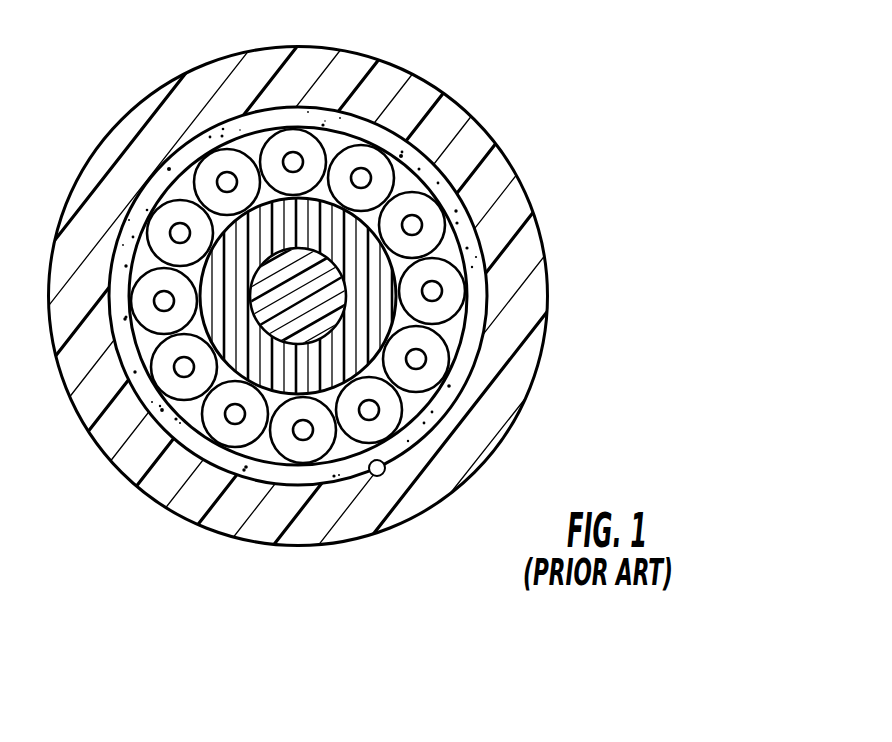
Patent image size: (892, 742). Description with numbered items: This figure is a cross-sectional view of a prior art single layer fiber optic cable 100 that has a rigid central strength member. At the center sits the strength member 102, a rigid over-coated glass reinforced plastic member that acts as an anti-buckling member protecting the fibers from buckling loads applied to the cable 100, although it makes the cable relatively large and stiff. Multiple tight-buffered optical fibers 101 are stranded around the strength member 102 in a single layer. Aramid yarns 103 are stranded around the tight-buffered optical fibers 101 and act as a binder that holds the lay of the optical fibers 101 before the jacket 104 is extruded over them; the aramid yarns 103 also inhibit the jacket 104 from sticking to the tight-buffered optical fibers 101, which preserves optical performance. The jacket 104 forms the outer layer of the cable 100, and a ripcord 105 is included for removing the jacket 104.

The single layer cable 100 is at (404, 279).
The tight-buffered optical fibers 101 is at (435, 220).
The strength member 102 is at (343, 328).
The aramid yarns 103 is at (405, 142).
The jacket 104 is at (357, 85).
The ripcord 105 is at (388, 467).